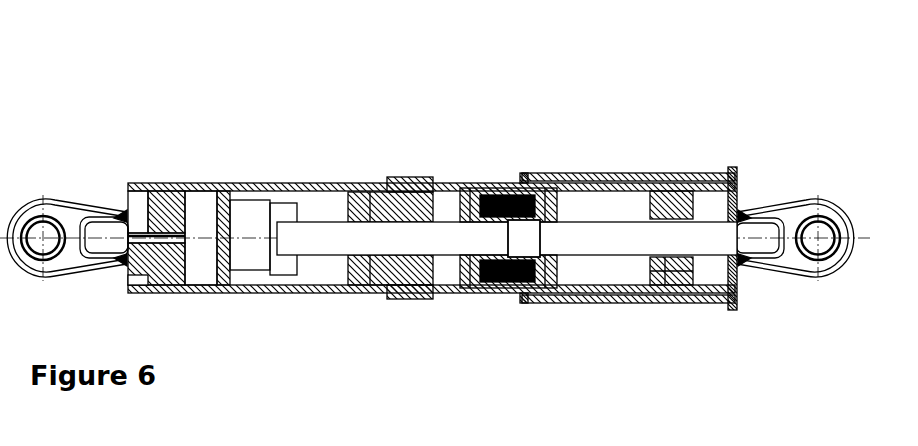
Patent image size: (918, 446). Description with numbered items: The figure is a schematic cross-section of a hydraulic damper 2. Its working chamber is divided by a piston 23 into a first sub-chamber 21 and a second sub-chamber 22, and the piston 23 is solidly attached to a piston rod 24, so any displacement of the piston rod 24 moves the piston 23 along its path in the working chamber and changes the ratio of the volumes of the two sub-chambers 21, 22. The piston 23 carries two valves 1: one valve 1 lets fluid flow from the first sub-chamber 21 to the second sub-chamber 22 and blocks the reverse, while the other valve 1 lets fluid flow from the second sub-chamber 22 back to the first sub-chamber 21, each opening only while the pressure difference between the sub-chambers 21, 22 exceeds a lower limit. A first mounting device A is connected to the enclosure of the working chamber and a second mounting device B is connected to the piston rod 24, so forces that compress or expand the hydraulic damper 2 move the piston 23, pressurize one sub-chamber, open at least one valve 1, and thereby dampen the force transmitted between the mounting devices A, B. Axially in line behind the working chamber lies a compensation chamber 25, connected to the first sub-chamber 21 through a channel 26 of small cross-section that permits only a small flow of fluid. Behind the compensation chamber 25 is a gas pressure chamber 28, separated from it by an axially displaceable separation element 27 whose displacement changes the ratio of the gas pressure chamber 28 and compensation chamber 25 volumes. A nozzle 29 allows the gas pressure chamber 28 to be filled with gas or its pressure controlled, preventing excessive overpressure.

The valve 1 is at (498, 190).
The hydraulic damper 2 is at (441, 221).
The first sub-chamber 21 is at (445, 203).
The second sub-chamber 22 is at (588, 195).
The piston 23 is at (522, 305).
The piston rod 24 is at (692, 232).
The compensation chamber 25 is at (328, 207).
The channel 26 is at (371, 299).
The separation element 27 is at (218, 286).
The gas pressure chamber 28 is at (199, 207).
The nozzle 29 is at (135, 193).
The first mounting device A is at (47, 220).
The second mounting device B is at (818, 276).